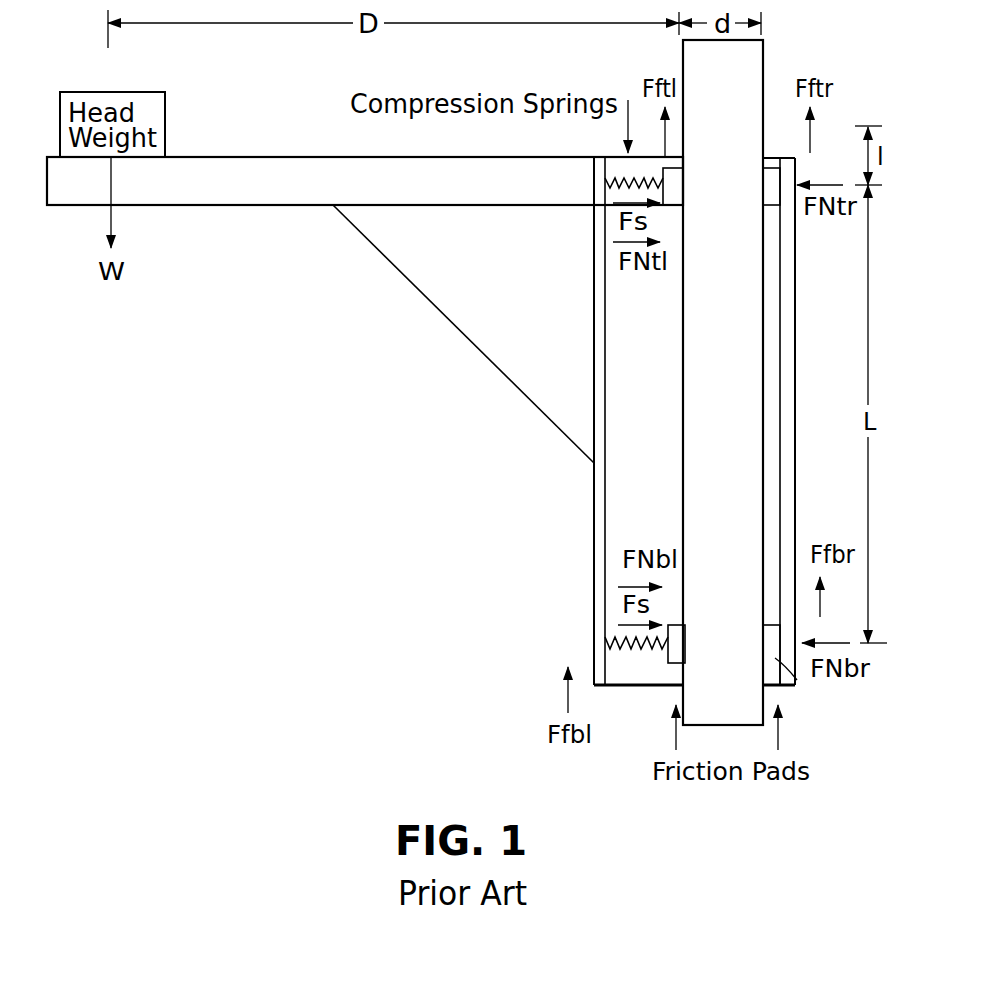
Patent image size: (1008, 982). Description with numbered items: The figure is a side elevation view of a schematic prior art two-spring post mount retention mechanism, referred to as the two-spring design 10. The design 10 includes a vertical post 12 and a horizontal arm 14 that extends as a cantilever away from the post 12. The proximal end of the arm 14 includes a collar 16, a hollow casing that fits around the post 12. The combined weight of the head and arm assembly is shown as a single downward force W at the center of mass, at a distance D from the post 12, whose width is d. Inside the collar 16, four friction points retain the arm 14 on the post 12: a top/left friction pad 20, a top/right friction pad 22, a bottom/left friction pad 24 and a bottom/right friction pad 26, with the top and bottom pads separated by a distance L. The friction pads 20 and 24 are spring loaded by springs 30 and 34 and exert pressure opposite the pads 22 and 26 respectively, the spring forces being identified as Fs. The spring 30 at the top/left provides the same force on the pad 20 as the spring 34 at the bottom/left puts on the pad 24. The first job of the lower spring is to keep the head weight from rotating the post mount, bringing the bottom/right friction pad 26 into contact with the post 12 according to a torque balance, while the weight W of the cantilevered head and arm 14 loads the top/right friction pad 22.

The two-spring design 10 is at (338, 440).
The post 12 is at (749, 62).
The arm 14 is at (190, 207).
The collar 16 is at (597, 535).
The top/left friction pad 20 is at (670, 177).
The top/right friction pad 22 is at (770, 174).
The bottom/left friction pad 24 is at (675, 655).
The bottom/right friction pad 26 is at (797, 687).
The spring 30 is at (626, 180).
The spring 34 is at (615, 643).